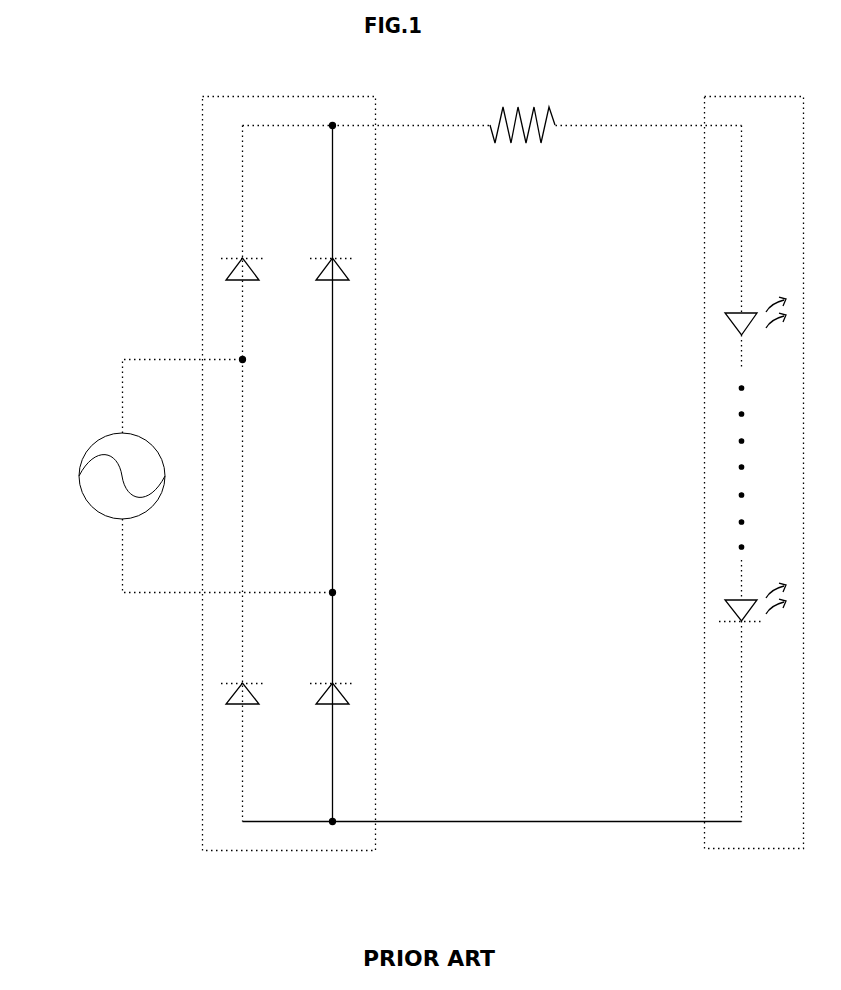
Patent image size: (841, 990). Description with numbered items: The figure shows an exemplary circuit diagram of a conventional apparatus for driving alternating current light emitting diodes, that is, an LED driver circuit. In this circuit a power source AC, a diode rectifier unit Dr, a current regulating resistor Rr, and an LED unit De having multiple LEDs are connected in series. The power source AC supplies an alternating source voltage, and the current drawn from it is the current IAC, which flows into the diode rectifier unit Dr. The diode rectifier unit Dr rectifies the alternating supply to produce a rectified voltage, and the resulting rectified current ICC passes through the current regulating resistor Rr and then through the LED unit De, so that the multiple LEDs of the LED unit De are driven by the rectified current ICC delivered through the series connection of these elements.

The diode rectifier unit Dr is at (297, 852).
The LED unit De is at (745, 850).
The power source AC is at (80, 476).
The current of the AC IAC is at (143, 349).
The rectified current ICC is at (470, 83).
The current regulating resistor Rr is at (522, 140).